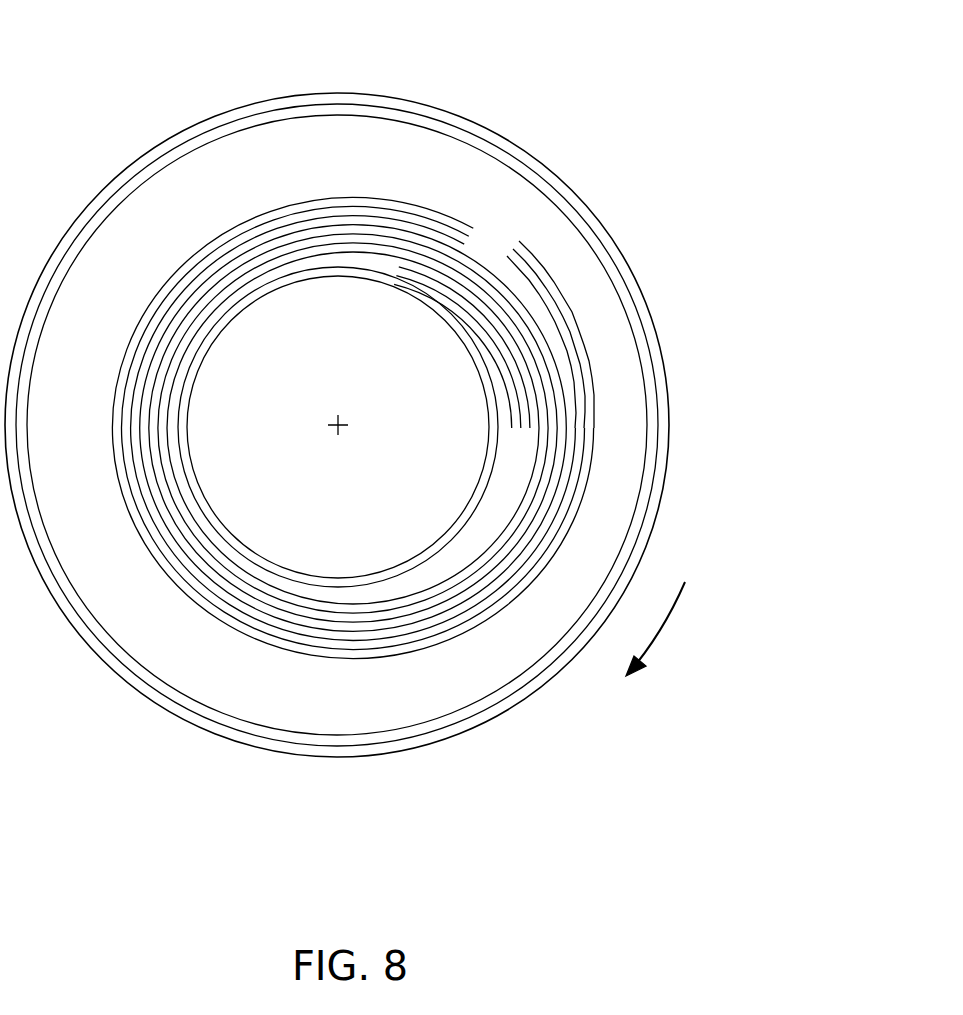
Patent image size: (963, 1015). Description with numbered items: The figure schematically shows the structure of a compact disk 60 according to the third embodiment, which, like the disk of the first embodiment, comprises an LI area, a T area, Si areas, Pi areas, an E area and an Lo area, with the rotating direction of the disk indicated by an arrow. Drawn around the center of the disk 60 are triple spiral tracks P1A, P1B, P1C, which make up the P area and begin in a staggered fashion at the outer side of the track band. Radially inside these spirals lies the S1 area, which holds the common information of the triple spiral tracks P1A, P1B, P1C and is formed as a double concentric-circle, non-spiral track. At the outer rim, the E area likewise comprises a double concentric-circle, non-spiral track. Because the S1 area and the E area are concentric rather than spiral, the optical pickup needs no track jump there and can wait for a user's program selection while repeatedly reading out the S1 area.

The compact disk 60 is at (83, 53).
The spiral track P1A is at (530, 281).
The spiral track P1B is at (567, 323).
The spiral track P1C is at (590, 370).
The S1 area S1 is at (488, 381).
The E area E is at (631, 538).